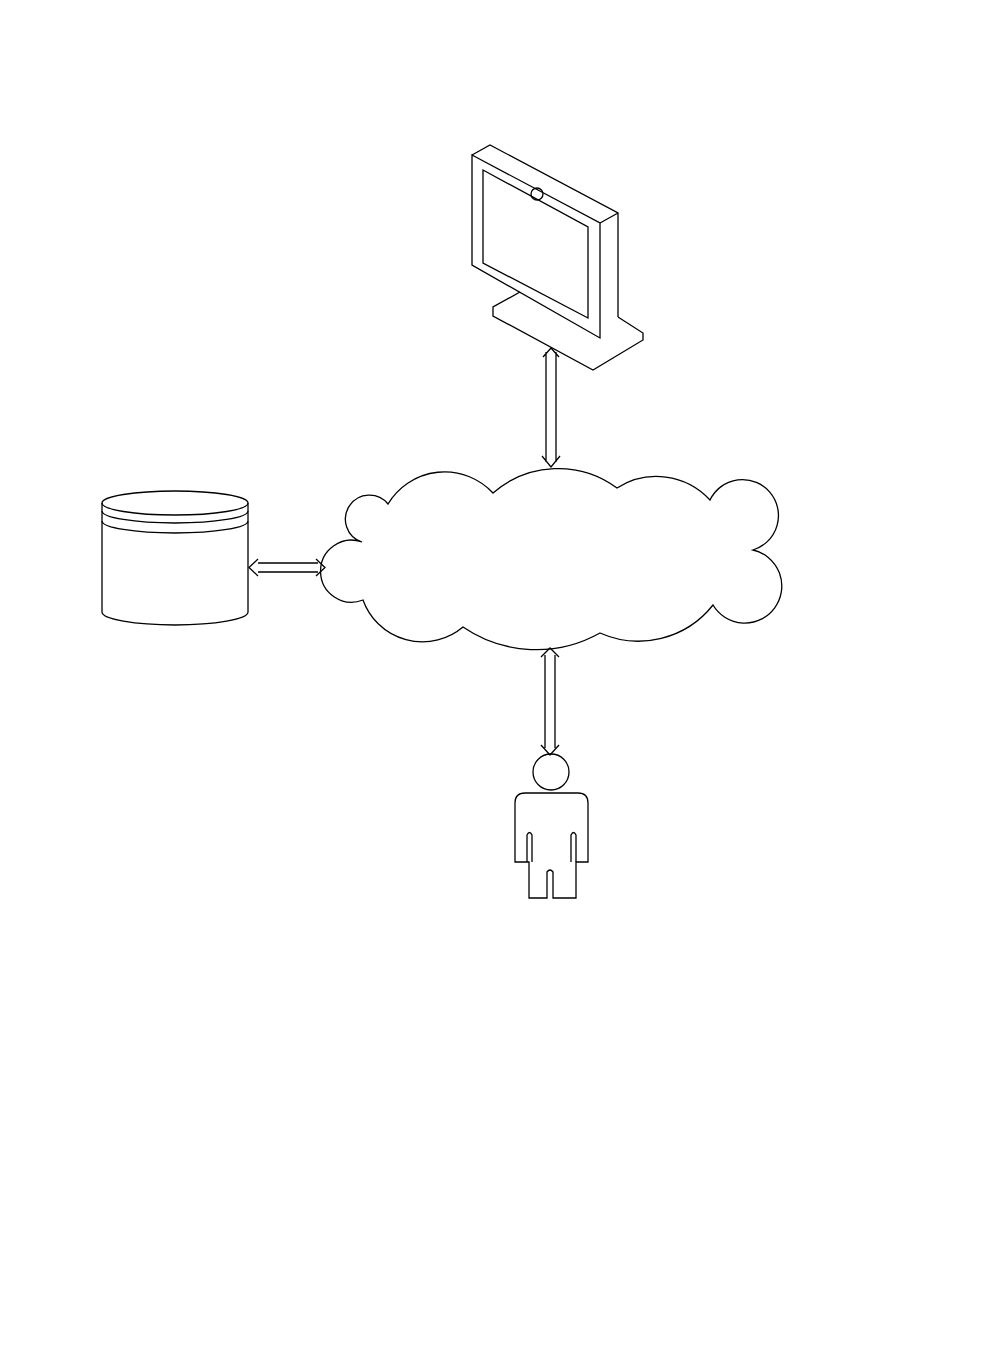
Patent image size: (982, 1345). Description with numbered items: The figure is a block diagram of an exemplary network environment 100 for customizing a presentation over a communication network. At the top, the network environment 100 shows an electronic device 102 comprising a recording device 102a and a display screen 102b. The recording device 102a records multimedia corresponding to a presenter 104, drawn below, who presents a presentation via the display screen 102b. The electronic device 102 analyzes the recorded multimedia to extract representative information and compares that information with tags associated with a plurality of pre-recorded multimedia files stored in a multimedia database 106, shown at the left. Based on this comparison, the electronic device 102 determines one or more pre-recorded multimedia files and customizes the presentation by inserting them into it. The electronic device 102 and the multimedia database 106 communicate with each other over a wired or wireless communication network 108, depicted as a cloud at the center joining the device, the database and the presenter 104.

The network environment 100 is at (836, 57).
The electronic device 102 is at (518, 158).
The recording device 102a is at (538, 188).
The display screen 102b is at (588, 288).
The presenter 104 is at (568, 767).
The multimedia database 106 is at (192, 580).
The communication network 108 is at (697, 572).